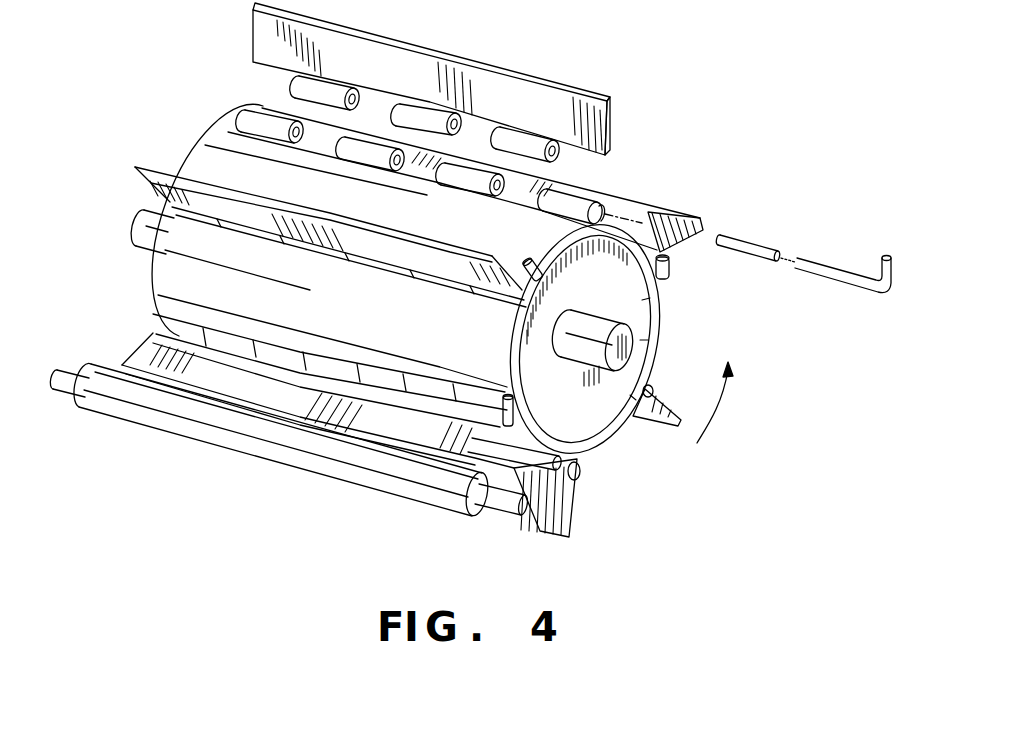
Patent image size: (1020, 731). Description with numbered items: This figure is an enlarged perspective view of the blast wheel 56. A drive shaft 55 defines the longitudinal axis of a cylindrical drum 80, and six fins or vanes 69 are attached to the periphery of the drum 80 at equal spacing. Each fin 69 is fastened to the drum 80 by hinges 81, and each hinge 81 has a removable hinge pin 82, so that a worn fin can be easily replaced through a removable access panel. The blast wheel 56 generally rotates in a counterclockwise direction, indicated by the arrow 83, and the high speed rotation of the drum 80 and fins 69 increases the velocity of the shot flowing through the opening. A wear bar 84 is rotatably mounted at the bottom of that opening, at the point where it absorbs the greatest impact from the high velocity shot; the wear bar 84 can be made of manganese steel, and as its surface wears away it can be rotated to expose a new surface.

The drive shaft 55 is at (140, 232).
The blast wheel 56 is at (697, 149).
The fins 69 is at (614, 112).
The cylindrical drum 80 is at (660, 337).
The hinges 81 is at (254, 110).
The hinge pin 82 is at (846, 270).
The arrow 83 is at (722, 410).
The wear bar 84 is at (430, 497).